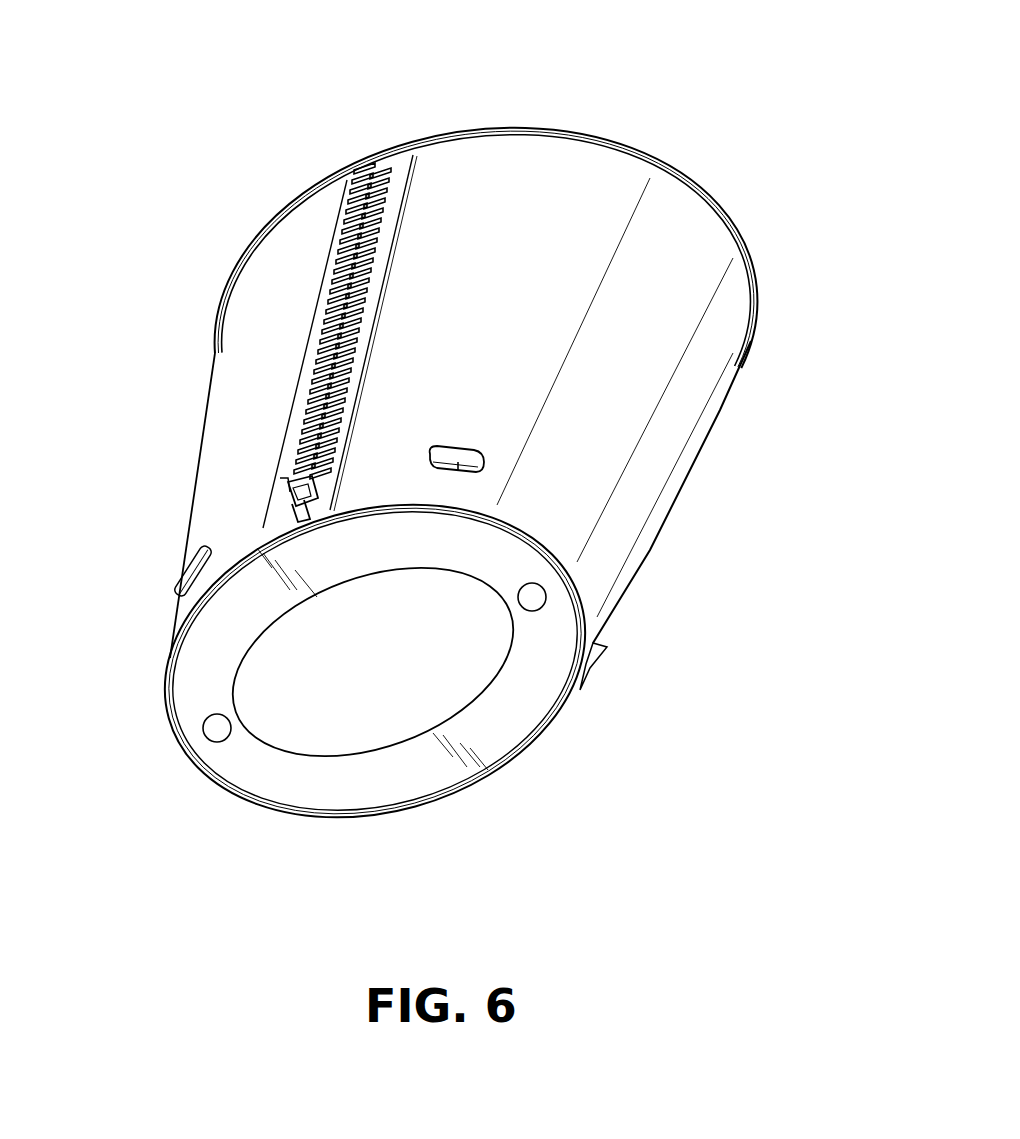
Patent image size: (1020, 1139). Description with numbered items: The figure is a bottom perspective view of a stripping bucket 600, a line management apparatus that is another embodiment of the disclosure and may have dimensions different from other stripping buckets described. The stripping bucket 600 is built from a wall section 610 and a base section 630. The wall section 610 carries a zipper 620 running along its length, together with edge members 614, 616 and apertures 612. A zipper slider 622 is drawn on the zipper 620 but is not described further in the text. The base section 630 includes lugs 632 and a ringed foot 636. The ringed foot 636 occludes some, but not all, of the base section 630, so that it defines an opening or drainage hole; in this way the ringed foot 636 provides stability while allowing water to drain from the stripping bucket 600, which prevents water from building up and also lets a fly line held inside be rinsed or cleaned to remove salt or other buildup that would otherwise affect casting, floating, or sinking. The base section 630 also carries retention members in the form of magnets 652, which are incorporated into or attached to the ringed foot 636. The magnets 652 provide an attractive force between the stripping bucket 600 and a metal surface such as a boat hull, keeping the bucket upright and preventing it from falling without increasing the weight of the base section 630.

The stripping bucket 600 is at (290, 114).
The wall section 610 is at (538, 267).
The apertures 612 is at (482, 454).
The edge member 614 is at (563, 130).
The edge member 616 is at (585, 604).
The zipper 620 is at (322, 378).
The zipper slider 622 is at (288, 506).
The base section 630 is at (385, 792).
The lugs 632 is at (458, 462).
The ringed foot 636 is at (287, 778).
The magnets 652 is at (214, 730).